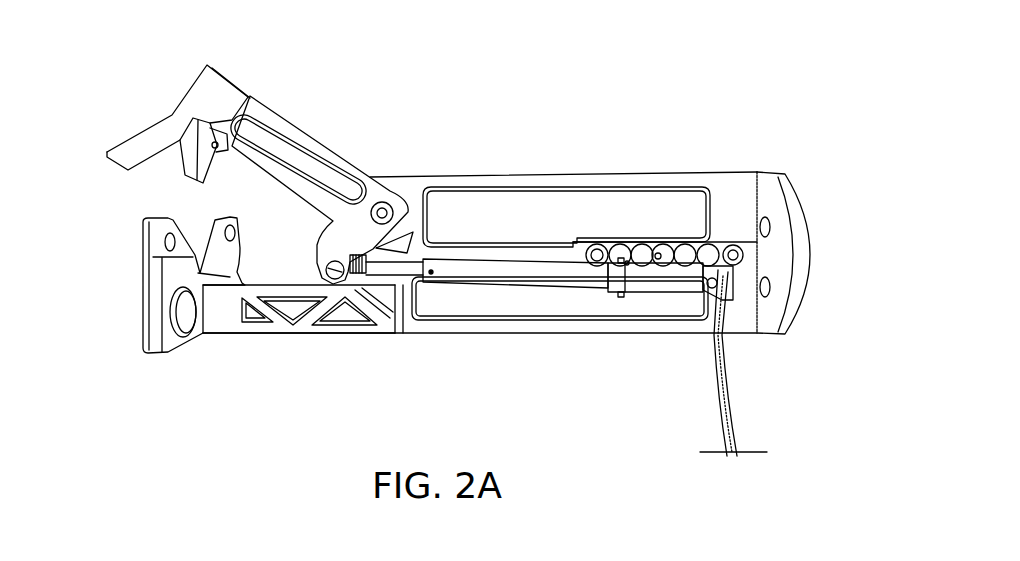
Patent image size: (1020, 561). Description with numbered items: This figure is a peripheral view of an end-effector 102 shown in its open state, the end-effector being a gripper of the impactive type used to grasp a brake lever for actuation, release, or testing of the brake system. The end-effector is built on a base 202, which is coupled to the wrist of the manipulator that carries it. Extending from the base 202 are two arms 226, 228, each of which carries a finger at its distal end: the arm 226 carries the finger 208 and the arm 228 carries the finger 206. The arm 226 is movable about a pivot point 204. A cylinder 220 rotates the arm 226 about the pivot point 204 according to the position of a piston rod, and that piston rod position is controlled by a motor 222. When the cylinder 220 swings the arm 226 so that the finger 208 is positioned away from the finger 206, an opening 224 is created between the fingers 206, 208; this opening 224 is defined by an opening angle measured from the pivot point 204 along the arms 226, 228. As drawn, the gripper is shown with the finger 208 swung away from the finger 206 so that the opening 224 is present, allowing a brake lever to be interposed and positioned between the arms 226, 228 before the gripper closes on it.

The chopping tool assembly 102 is at (651, 108).
The housing body 202 is at (817, 304).
The pivot pin 204 is at (383, 203).
The mounting bracket 206 is at (144, 320).
The thumb paddle 208 is at (123, 145).
The actuating rod 220 is at (455, 292).
The slider block 222 is at (655, 284).
The hinge block 224 is at (107, 168).
The lever arm 226 is at (282, 100).
The support bar 228 is at (263, 343).